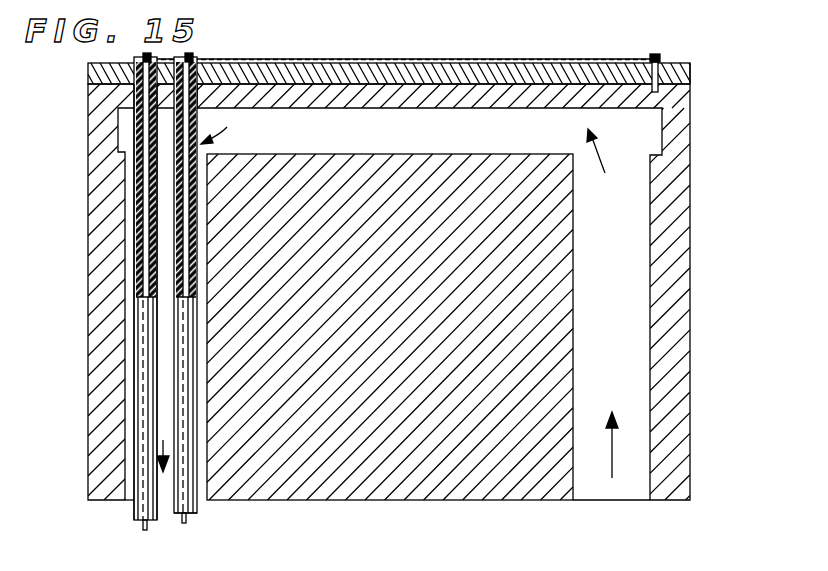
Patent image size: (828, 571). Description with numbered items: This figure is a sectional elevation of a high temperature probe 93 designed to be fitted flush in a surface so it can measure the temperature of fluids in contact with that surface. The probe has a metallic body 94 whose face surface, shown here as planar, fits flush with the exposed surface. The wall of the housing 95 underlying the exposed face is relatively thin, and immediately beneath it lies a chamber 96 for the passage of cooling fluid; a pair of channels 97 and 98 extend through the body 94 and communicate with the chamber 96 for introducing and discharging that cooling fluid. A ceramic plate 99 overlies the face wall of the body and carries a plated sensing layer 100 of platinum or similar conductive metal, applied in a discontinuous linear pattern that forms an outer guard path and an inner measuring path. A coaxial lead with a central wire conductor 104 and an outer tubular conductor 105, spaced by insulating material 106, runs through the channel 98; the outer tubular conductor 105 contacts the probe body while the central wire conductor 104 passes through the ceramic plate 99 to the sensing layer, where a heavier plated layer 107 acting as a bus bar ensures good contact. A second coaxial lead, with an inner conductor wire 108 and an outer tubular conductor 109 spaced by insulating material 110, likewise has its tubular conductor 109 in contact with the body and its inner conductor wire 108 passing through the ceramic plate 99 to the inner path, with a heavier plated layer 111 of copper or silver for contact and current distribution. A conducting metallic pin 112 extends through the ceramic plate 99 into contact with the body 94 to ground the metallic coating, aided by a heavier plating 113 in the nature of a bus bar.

The high temperature probe 93 is at (694, 242).
The metallic body 94 is at (88, 370).
The housing 95 is at (427, 107).
The chamber 96 is at (515, 135).
The channel 97 is at (628, 490).
The channel 98 is at (130, 498).
The ceramic plate 99 is at (88, 78).
The plated sensing layer 100 is at (371, 59).
The central wire conductor 104 is at (145, 530).
The outer tubular conductor 105 is at (138, 128).
The insulating material 106 is at (140, 187).
The heavier plated layer 107 is at (143, 57).
The inner conductor wire 108 is at (185, 523).
The outer tubular conductor 109 is at (198, 510).
The insulating material 110 is at (197, 120).
The heavier plated layer 111 is at (190, 57).
The conducting metallic pin 112 is at (690, 78).
The heavier plating 113 is at (656, 58).